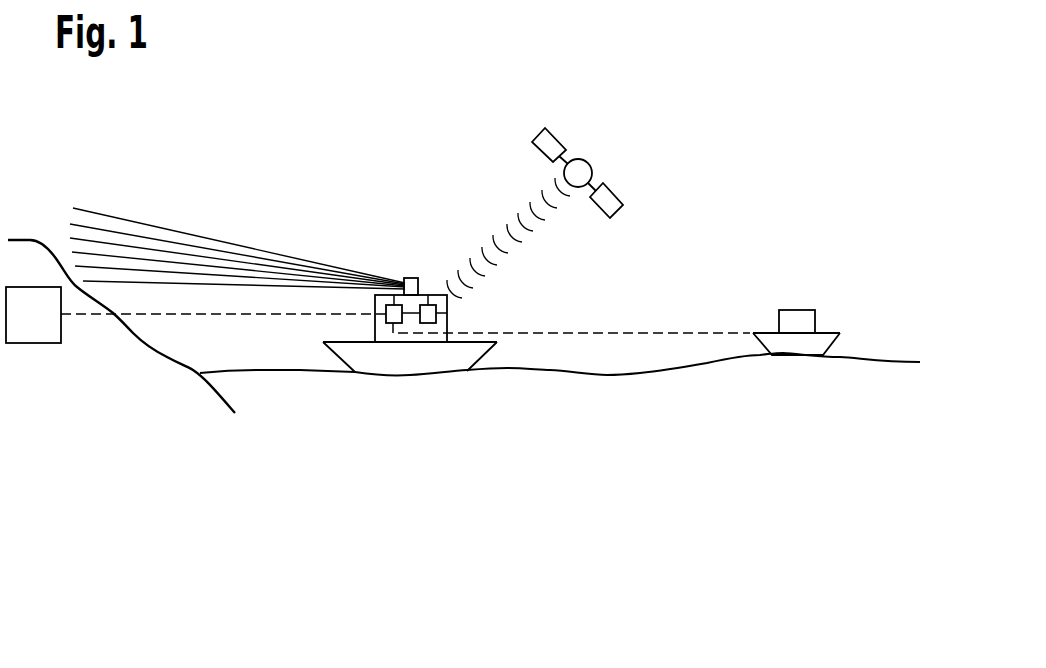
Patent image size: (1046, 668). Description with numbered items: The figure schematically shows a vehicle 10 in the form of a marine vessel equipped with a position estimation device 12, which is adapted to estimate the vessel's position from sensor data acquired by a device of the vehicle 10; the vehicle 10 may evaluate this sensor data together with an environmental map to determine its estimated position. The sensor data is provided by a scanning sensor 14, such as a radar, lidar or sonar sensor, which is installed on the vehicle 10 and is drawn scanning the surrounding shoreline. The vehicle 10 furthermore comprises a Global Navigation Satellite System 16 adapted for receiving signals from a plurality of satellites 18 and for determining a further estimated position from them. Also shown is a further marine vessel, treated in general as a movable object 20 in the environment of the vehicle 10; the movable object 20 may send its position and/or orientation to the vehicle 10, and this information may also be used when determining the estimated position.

The vehicle 10 is at (438, 363).
The position estimation device 12 is at (32, 343).
The scanning sensor 14 is at (413, 277).
The Global Navigation Satellite System 16 is at (447, 313).
The satellites 18 is at (578, 159).
The movable object 20 is at (797, 347).